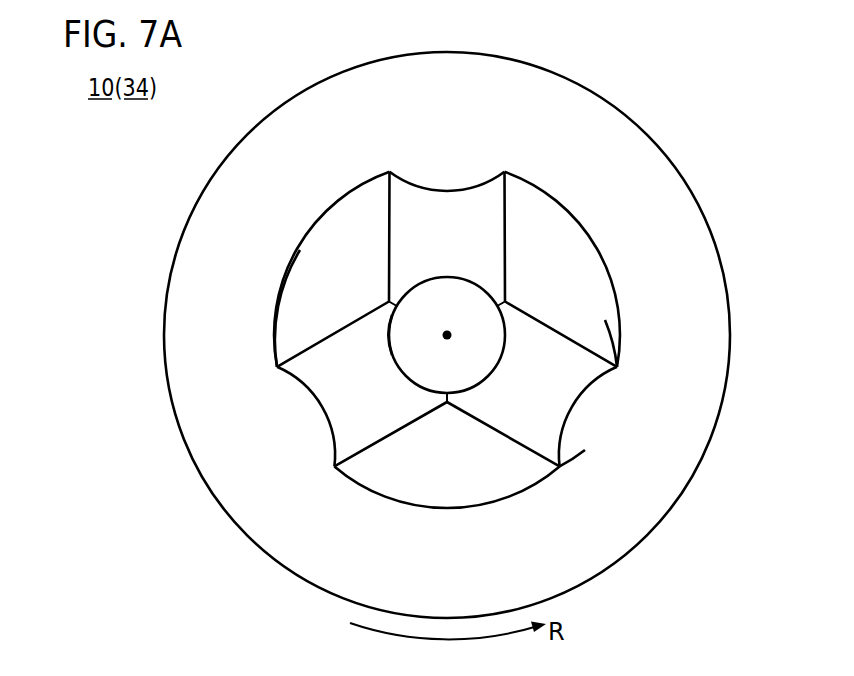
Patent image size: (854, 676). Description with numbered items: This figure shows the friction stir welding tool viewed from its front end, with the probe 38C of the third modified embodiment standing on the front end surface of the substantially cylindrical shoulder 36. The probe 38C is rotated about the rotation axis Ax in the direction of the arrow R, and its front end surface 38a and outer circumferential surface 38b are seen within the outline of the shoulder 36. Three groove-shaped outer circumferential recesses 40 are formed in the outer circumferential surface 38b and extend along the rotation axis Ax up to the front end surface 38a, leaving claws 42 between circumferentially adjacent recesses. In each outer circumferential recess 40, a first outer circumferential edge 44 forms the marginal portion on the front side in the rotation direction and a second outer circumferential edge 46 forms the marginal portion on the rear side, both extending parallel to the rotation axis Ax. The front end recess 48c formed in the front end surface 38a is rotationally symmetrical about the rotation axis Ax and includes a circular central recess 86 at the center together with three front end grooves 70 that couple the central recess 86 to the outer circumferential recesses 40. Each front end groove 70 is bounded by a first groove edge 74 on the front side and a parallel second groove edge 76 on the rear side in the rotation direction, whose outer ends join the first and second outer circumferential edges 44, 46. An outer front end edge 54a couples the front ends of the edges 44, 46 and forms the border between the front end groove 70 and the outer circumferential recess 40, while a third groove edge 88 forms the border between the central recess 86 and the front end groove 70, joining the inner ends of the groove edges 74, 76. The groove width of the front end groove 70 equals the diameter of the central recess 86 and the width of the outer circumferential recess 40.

The shoulder 36 is at (632, 138).
The front end surface 38a is at (335, 238).
The outer circumferential surface 38b is at (385, 500).
The probe 38C is at (608, 247).
The outer circumferential recess 40 is at (312, 425).
The claw 42 is at (280, 277).
The first outer circumferential edge 44 is at (619, 367).
The second outer circumferential edge 46 is at (560, 470).
The front end recess 48c is at (483, 247).
The outer front end edge 54a is at (570, 418).
The front end groove 70 is at (492, 402).
The first groove edge 74 is at (557, 332).
The second groove edge 76 is at (500, 437).
The central recess 86 is at (400, 352).
The third groove edge 88 is at (437, 278).
The rotation axis Ax is at (449, 351).